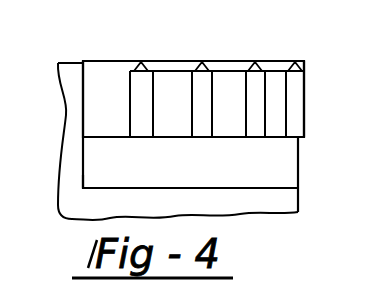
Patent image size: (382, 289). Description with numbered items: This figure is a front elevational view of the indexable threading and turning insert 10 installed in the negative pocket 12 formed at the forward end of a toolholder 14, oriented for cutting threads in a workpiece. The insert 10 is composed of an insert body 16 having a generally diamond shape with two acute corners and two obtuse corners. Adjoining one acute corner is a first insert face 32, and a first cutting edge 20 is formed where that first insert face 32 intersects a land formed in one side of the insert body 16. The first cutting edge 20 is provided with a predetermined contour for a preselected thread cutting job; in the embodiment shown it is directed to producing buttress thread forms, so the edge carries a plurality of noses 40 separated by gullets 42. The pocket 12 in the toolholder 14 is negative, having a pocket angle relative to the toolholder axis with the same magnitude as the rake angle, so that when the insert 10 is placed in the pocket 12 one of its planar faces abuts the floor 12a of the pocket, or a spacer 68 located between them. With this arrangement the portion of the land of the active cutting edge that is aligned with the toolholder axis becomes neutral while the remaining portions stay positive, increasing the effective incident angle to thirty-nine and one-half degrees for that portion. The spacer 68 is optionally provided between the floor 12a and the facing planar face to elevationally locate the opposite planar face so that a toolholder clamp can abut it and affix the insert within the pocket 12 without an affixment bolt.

The indexable threading and turning insert 10 is at (311, 53).
The pocket 12 is at (85, 95).
The floor 12a is at (105, 188).
The toolholder 14 is at (60, 75).
The insert body 16 is at (306, 136).
The first cutting edge 20 is at (172, 62).
The first insert face 32 is at (168, 112).
The noses 40 is at (201, 114).
The gullets 42 is at (229, 110).
The spacer 68 is at (298, 163).